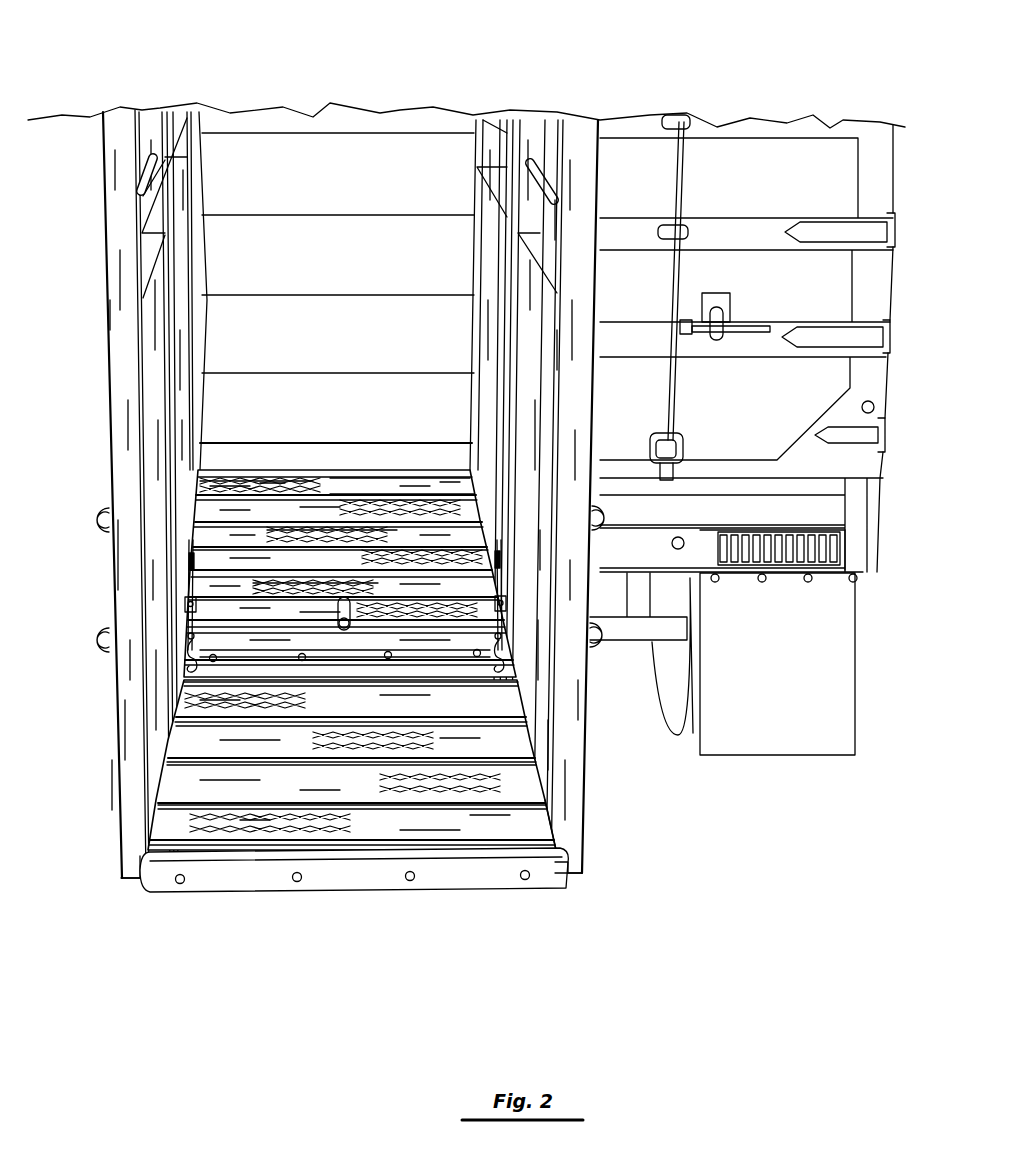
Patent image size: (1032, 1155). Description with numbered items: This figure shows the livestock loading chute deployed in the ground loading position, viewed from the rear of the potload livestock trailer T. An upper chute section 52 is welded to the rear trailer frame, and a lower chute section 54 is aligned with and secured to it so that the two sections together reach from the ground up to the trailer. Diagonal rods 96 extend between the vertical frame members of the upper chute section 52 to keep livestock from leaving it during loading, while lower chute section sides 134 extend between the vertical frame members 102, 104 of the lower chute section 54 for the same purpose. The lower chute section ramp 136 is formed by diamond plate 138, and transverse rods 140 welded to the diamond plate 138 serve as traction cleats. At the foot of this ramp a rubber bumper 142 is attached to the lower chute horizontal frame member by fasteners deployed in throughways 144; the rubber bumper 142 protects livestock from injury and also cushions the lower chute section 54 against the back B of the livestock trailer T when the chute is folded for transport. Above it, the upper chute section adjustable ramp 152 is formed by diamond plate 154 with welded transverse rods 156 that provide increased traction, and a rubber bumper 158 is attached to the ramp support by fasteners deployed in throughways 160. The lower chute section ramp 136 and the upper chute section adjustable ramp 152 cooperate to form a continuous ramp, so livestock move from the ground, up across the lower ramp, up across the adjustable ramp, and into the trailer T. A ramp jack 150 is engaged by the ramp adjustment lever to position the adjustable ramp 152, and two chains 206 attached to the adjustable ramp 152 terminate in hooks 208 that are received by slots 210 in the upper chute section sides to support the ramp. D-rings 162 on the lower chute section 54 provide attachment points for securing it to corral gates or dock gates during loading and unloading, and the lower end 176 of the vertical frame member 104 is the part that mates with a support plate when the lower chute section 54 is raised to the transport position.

The upper chute section 52 is at (404, 192).
The lower chute section 54 is at (104, 410).
The diagonal rods 96 is at (168, 118).
The vertical frame member 102 is at (122, 735).
The vertical frame member 104 is at (588, 698).
The lower chute section sides 134 is at (155, 166).
The lower chute section ramp 136 is at (178, 777).
The diamond plate 138 is at (527, 822).
The transverse rods 140 is at (488, 720).
The rubber bumper 142 is at (547, 889).
The throughways 144 is at (293, 878).
The ramp jack 150 is at (334, 614).
The upper chute section adjustable ramp 152 is at (226, 585).
The diamond plate 154 is at (386, 478).
The transverse rods 156 is at (252, 475).
The rubber bumper 158 is at (235, 656).
The throughways 160 is at (386, 655).
The D-rings 162 is at (97, 520).
The lower end 176 is at (573, 877).
The chains 206 is at (190, 604).
The hooks 208 is at (196, 668).
The slots 210 is at (188, 560).
The livestock trailer T is at (830, 96).
The back of the livestock trailer B is at (742, 404).